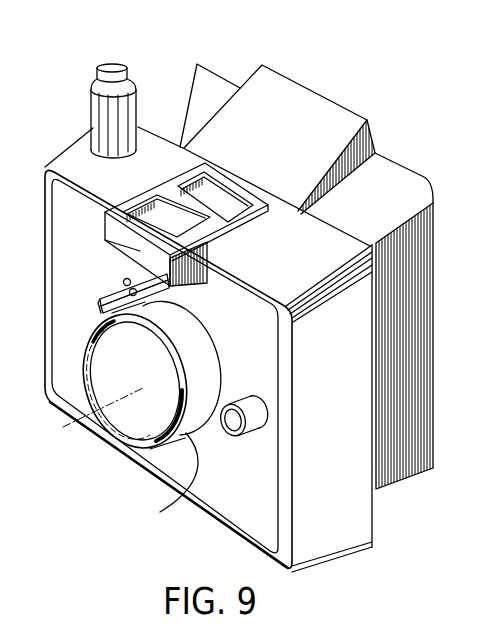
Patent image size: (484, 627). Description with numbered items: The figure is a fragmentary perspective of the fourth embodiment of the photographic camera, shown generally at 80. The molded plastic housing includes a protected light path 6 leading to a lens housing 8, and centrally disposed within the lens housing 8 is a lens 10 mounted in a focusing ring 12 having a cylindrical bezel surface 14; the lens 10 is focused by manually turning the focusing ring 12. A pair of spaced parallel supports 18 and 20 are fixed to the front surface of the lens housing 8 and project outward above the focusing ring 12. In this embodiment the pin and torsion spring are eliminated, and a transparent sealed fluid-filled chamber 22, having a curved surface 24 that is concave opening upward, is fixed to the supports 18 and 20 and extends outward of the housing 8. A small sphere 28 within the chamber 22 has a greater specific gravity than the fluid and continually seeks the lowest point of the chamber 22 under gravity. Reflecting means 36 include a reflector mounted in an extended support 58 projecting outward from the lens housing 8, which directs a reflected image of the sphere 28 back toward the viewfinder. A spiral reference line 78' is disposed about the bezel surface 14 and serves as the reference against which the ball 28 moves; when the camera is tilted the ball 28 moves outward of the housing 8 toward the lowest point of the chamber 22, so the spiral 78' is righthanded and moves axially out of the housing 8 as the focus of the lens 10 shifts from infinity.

The protected light path 6 is at (411, 322).
The lens housing 8 is at (340, 375).
The lens 10 is at (83, 413).
The focusing ring 12 is at (142, 451).
The cylindrical bezel surface 14 is at (173, 482).
The support 18 is at (218, 254).
The support 20 is at (116, 226).
The transparent sealed fluid-filled chamber 22 is at (103, 306).
The curved surface 24 is at (97, 323).
The small sphere 28 is at (124, 280).
The reflecting means 36 is at (96, 220).
The extended support 58 is at (113, 207).
The spiral reference line 78' is at (150, 380).
The fourth embodiment 80 is at (370, 516).